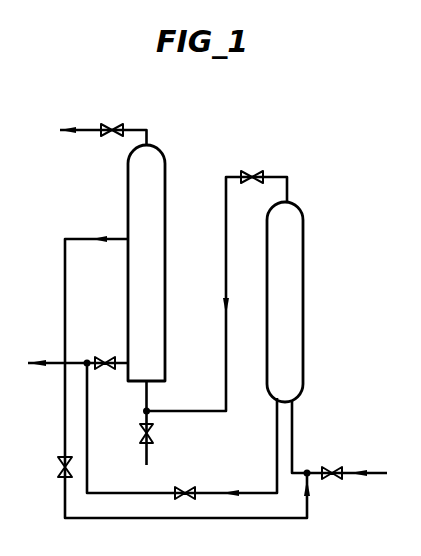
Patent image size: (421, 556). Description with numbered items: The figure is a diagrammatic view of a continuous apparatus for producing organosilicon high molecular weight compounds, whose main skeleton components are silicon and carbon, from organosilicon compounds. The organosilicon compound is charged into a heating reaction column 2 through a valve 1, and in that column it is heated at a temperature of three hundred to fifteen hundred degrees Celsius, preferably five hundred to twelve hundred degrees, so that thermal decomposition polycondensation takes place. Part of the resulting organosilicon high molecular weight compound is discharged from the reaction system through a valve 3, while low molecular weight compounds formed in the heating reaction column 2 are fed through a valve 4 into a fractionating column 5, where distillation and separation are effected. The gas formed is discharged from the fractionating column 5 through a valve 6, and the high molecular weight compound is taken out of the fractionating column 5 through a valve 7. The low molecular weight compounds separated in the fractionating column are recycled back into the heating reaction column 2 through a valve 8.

The valve 1 is at (334, 465).
The heating reaction column 2 is at (303, 303).
The valve 3 is at (189, 487).
The valve 4 is at (254, 172).
The fractionating column 5 is at (166, 256).
The valve 6 is at (113, 124).
The valve 7 is at (110, 359).
The valve 8 is at (58, 460).